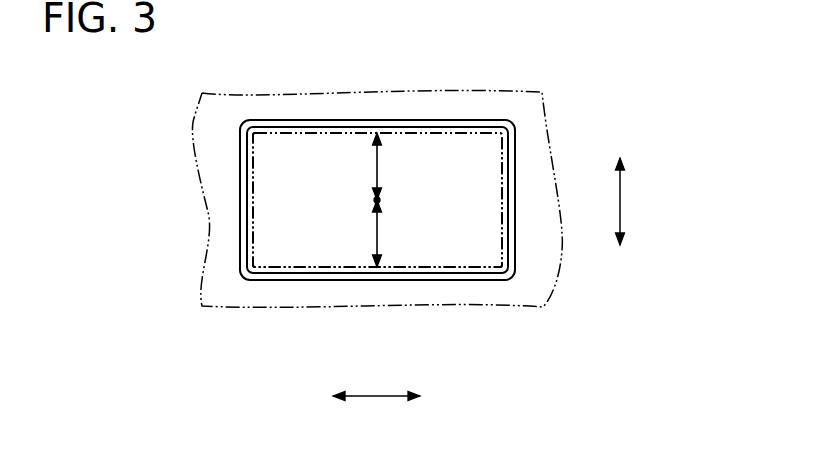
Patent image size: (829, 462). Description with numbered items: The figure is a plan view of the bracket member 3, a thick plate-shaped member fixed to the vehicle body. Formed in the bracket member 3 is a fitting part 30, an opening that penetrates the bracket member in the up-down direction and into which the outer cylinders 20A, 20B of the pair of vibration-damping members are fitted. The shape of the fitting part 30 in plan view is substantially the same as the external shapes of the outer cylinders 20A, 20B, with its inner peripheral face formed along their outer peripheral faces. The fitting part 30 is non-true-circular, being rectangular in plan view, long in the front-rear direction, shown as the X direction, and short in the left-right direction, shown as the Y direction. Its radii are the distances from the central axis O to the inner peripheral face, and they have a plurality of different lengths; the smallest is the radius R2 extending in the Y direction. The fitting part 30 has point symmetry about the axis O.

The bracket member 3 is at (565, 103).
The fitting part 30 is at (449, 148).
The outer cylinder 20A is at (253, 240).
The outer cylinder 20B is at (377, 255).
The radius R2 is at (377, 160).
The axis O is at (377, 200).
The X direction X is at (372, 396).
The Y direction Y is at (620, 198).